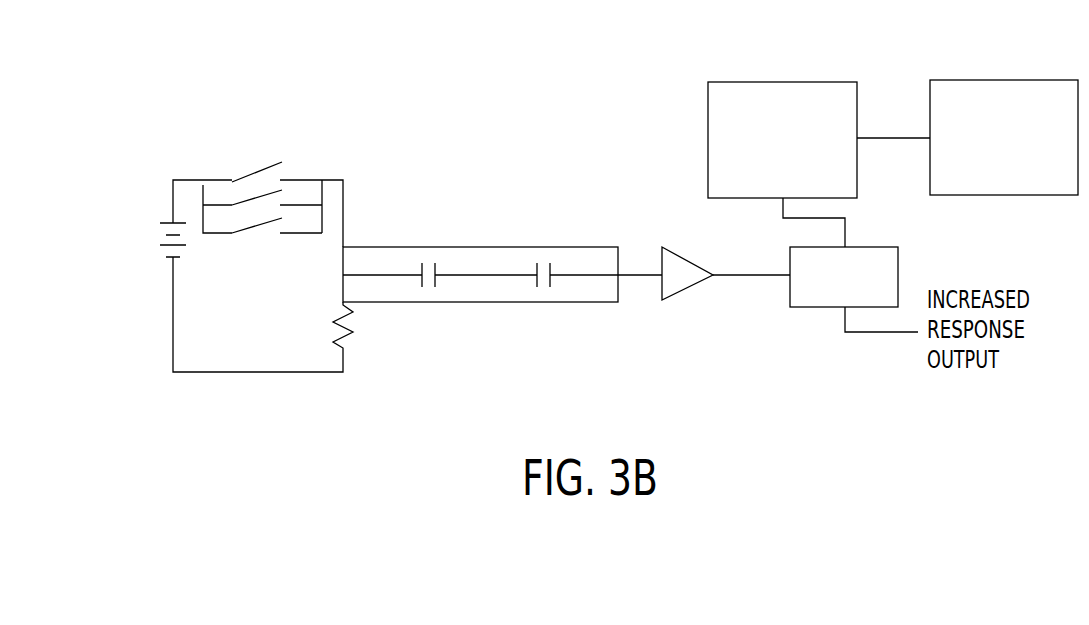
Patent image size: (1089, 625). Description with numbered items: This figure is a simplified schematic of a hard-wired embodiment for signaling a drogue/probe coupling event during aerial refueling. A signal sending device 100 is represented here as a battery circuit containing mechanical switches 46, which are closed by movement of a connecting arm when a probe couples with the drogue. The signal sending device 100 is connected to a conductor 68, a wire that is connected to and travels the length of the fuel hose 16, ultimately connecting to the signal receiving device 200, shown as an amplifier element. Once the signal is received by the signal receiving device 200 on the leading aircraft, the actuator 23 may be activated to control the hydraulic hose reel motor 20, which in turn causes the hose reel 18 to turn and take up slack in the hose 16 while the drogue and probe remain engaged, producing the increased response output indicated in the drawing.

The fuel hose 16 is at (502, 245).
The hose reel 18 is at (1003, 80).
The hydraulic hose reel motor 20 is at (785, 82).
The actuator 23 is at (875, 247).
The mechanical switch 46 is at (246, 169).
The conductor 68 is at (470, 272).
The signal sending device 100 is at (253, 194).
The signal receiving device 200 is at (697, 307).